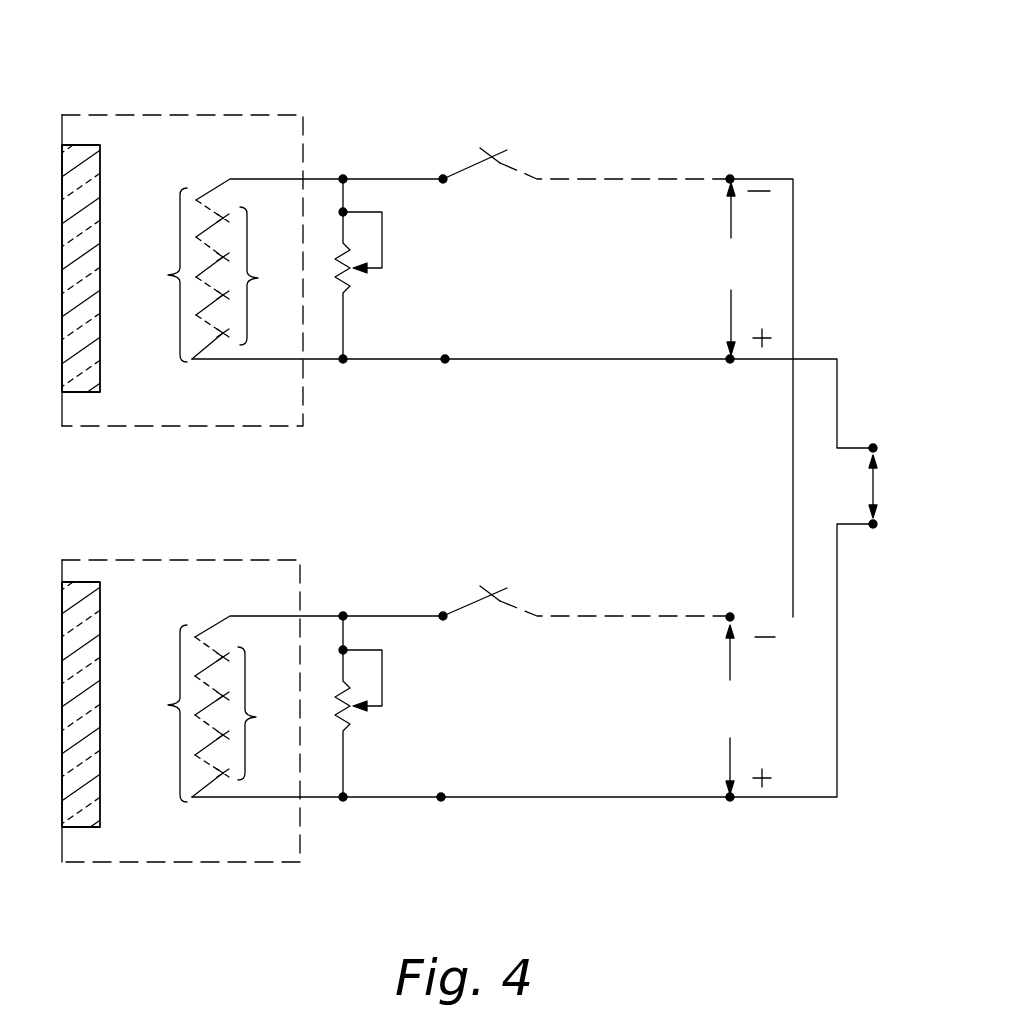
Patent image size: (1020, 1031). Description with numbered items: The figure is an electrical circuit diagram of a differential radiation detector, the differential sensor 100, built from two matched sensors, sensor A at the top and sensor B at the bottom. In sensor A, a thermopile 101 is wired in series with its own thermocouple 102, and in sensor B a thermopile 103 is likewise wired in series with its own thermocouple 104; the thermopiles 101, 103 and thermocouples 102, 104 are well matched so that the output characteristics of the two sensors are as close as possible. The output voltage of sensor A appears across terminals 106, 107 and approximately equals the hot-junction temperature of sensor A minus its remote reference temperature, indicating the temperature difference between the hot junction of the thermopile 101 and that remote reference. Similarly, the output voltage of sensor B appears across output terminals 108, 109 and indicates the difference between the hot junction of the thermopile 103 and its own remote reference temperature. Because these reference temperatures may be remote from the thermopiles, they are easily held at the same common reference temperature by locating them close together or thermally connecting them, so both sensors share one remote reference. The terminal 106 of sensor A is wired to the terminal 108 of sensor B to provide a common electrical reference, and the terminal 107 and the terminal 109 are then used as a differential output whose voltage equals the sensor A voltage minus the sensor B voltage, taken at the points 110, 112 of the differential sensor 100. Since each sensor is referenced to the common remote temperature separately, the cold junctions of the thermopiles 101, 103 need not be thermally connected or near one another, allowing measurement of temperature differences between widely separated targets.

The differential sensor 100 is at (345, 93).
The thermopile 101 is at (207, 360).
The thermocouple 102 is at (725, 365).
The thermopile 103 is at (212, 798).
The thermocouple 104 is at (725, 805).
The terminal 106 is at (733, 177).
The terminal 107 is at (733, 362).
The output terminal 108 is at (733, 614).
The output terminal 109 is at (733, 801).
The first differential voltage terminal 110 is at (875, 444).
The second differential voltage terminal 112 is at (873, 529).